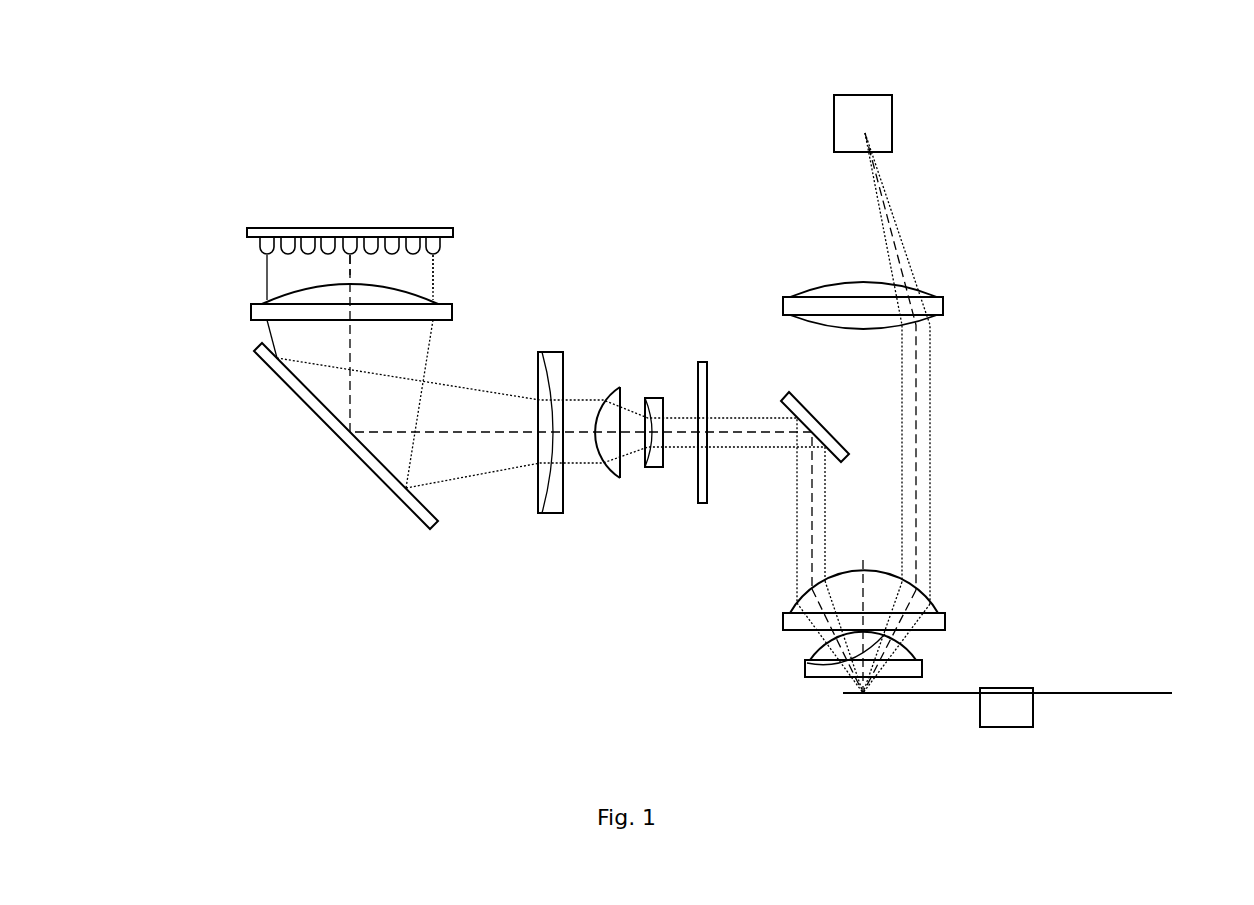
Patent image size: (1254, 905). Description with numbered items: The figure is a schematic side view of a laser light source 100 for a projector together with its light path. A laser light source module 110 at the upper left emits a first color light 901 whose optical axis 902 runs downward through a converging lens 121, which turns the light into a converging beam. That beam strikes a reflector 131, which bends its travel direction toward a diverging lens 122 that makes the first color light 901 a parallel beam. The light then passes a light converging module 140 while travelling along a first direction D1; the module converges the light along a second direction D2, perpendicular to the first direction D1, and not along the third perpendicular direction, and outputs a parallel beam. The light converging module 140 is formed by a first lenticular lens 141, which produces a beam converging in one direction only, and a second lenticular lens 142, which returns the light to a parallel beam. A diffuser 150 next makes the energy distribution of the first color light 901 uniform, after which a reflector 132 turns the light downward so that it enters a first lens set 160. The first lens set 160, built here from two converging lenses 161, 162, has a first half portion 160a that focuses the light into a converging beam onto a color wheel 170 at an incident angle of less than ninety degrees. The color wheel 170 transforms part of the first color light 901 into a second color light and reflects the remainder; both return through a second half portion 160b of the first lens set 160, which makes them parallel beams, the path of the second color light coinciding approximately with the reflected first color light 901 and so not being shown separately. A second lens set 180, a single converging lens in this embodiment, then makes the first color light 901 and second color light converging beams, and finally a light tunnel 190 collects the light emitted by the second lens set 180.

The laser light source 100 is at (267, 65).
The laser light source module 110 is at (247, 232).
The converging lens 121 is at (251, 314).
The diverging lens 122 is at (552, 514).
The reflector 131 is at (300, 392).
The reflector 132 is at (816, 428).
The light converging module 140 is at (637, 489).
The first lenticular lens 141 is at (615, 480).
The second lenticular lens 142 is at (657, 468).
The diffuser 150 is at (703, 362).
The first lens set 160 is at (792, 635).
The first half portion 160a is at (790, 622).
The second half portion 160b is at (827, 672).
The converging lens 161 is at (819, 602).
The converging lens 162 is at (807, 663).
The color wheel 170 is at (992, 720).
The second lens set 180 is at (942, 307).
The light tunnel 190 is at (887, 122).
The first color light 901 is at (435, 288).
The optical axis 902 is at (350, 272).
The first direction D1 is at (628, 430).
The second direction D2 is at (655, 224).